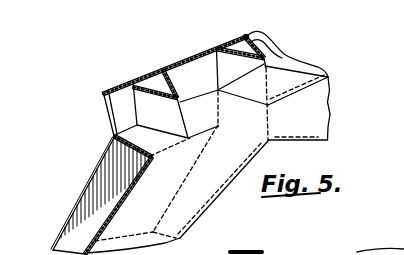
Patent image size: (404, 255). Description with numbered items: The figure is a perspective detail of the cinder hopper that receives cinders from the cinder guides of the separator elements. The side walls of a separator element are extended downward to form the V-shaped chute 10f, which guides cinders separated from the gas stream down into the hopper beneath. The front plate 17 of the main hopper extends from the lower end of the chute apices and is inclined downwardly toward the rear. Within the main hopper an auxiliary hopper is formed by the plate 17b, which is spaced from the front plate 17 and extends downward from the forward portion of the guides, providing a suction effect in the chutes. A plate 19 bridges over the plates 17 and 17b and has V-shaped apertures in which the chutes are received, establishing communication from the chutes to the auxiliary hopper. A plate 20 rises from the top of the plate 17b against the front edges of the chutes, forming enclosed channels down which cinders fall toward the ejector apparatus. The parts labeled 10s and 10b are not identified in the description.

The top rail member 10s is at (106, 94).
The curved fin / brace member 10b is at (266, 63).
The V-shaped chute 10f is at (255, 90).
The plate 20 is at (120, 109).
The plate 19 is at (143, 141).
The front plate 17 is at (177, 189).
The plate 17b is at (96, 174).